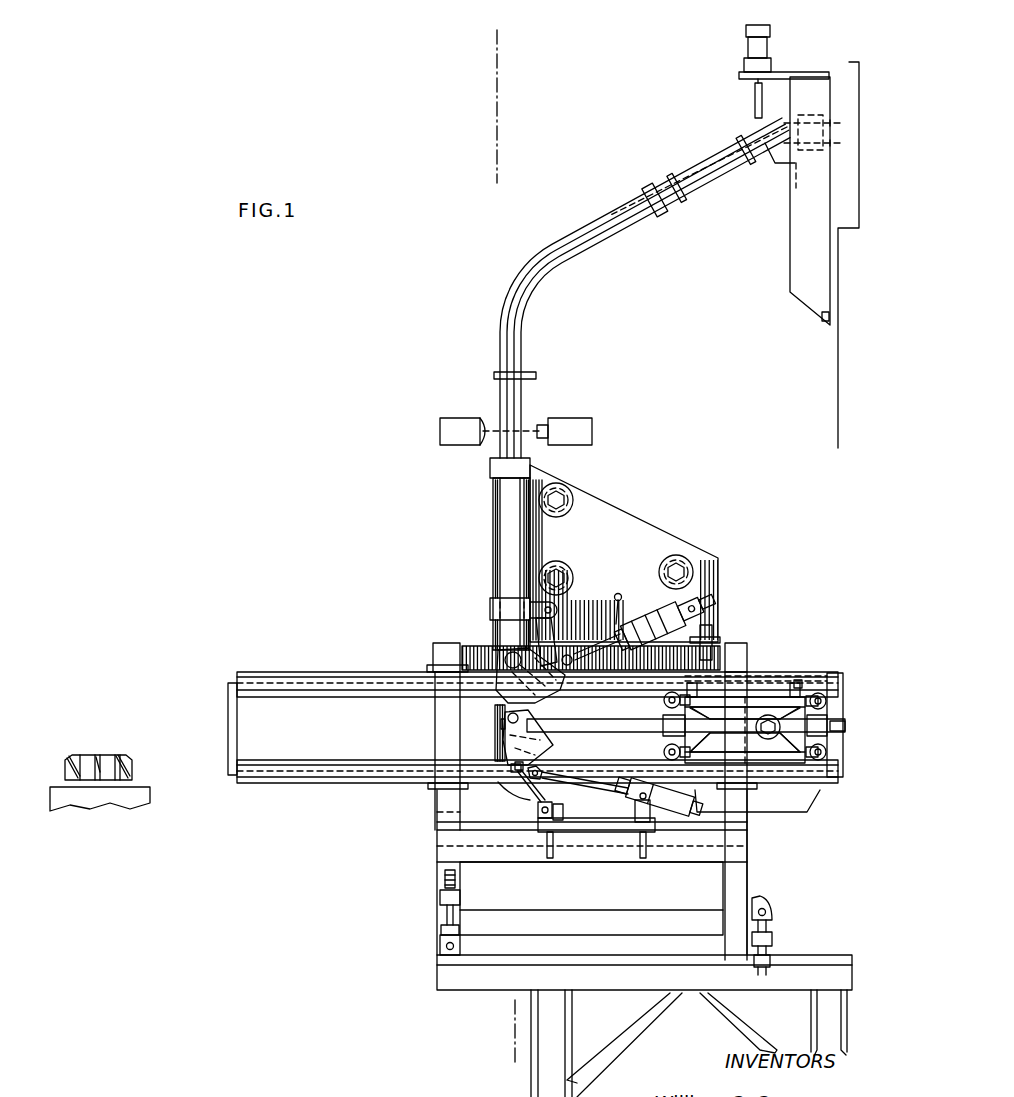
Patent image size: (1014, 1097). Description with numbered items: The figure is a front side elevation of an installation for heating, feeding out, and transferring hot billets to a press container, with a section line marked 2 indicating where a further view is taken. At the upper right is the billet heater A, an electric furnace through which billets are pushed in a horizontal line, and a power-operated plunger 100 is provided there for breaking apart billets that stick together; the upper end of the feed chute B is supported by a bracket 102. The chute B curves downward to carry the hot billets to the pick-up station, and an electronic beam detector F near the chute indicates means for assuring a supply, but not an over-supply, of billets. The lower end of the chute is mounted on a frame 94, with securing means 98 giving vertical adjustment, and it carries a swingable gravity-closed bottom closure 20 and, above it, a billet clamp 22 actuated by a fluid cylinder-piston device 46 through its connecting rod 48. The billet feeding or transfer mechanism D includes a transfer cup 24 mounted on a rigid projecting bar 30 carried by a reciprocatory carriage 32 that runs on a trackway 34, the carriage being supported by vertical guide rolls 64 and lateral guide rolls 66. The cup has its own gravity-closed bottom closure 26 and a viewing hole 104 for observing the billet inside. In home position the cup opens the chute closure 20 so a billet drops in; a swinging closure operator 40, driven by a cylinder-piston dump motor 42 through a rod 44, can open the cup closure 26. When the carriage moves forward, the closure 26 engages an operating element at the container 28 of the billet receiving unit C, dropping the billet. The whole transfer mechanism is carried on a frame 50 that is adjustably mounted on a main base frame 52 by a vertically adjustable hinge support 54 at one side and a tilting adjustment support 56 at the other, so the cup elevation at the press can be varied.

The section line 2- 2 is at (486, 38).
The bottom closure 20 is at (548, 700).
The billet clamp 22 is at (553, 617).
The transfer cup 24 is at (502, 743).
The bottom closure of the cup 26 is at (512, 757).
The container 28 is at (150, 802).
The projecting bar 30 is at (608, 735).
The carriage 32 is at (768, 698).
The trackway 34 is at (326, 758).
The closure operator 40 is at (514, 790).
The dump motor 42 is at (630, 803).
The rod 44 is at (592, 787).
The fluid cylinder-piston device 46 is at (648, 603).
The connecting rod 48 is at (616, 612).
The frame 50 is at (425, 853).
The main base frame 52 is at (425, 993).
The hinge support 54 is at (771, 920).
The tilting adjustment support 56 is at (440, 932).
The vertical guide rolls 64 is at (664, 704).
The lateral guide rolls 66 is at (800, 683).
The frame 94 is at (628, 550).
The securing means 98 is at (556, 518).
The power-operated plunger 100 is at (753, 110).
The bracket 102 is at (781, 167).
The viewing hole 104 is at (500, 724).
The billet heater A is at (852, 58).
The feed chute B is at (548, 248).
The billet receiving unit C is at (121, 748).
The billet feeding or transfer mechanism D is at (380, 660).
The electronic beam detector F is at (569, 418).